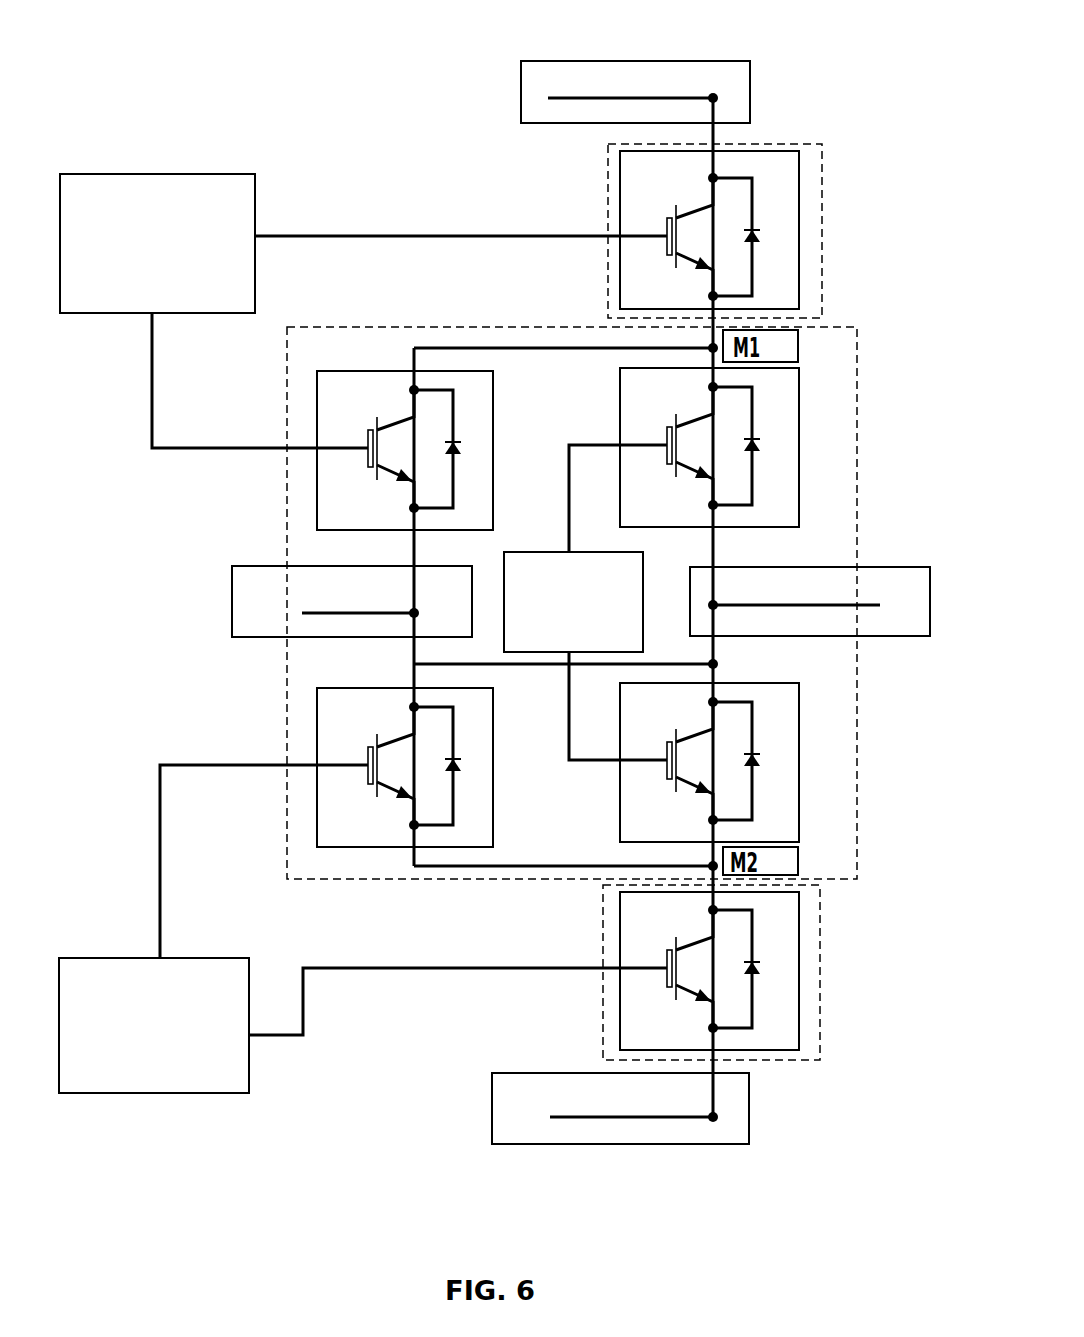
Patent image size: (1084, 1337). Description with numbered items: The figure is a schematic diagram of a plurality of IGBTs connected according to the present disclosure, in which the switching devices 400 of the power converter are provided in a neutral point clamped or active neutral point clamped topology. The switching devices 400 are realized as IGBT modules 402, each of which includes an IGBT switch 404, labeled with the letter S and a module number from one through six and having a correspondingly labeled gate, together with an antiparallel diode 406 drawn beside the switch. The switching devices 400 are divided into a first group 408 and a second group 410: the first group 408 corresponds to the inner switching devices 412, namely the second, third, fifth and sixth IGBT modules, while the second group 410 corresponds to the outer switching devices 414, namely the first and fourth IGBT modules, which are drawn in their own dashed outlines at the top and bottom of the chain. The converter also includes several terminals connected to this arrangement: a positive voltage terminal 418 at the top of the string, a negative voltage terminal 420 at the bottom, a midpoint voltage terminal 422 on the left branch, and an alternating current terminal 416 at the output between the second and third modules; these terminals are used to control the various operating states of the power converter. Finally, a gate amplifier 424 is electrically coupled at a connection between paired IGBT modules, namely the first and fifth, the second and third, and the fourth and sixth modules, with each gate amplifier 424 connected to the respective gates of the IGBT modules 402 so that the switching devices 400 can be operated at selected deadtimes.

The switching devices 400 is at (551, 600).
The IGBT modules 402 is at (810, 195).
The IGBT switch 404 is at (672, 213).
The antiparallel diode 406 is at (762, 445).
The first group 408 is at (624, 603).
The inner switching devices 412 is at (866, 535).
The second group 410 is at (770, 593).
The outer switching devices 414 is at (805, 130).
The alternating current (AC) terminal 416 is at (716, 603).
The positive voltage terminal 418 is at (713, 96).
The negative voltage terminal 420 is at (716, 1120).
The midpoint voltage terminal 422 is at (411, 618).
The gate amplifier 424 is at (135, 165).